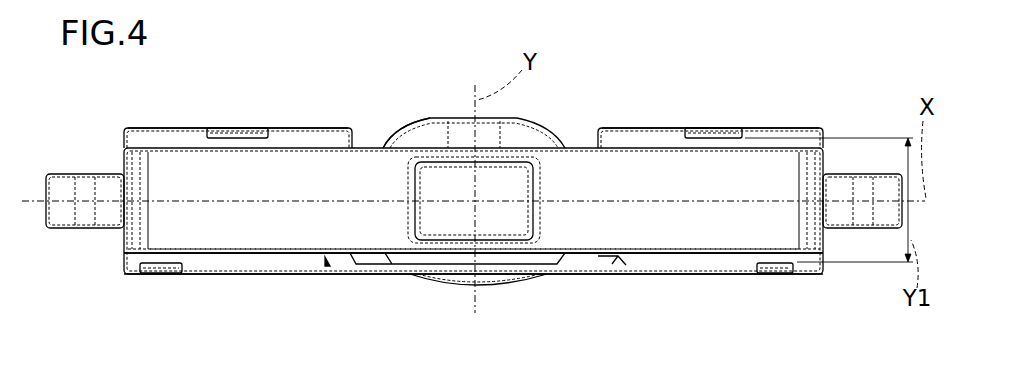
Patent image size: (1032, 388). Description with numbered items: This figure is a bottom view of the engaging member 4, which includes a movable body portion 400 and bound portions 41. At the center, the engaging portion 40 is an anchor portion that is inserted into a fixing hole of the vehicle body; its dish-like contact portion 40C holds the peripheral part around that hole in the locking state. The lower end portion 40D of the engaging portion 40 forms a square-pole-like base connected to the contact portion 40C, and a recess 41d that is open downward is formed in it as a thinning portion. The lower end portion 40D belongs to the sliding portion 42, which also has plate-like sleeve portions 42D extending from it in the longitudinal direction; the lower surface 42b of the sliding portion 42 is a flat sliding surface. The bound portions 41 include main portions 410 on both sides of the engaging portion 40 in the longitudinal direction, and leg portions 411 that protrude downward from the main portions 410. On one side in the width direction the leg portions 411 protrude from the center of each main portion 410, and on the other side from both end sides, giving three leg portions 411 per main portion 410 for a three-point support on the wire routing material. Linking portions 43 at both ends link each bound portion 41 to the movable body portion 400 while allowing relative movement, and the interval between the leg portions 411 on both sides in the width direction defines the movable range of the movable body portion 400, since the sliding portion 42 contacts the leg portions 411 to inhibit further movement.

The engaging member 4 is at (566, 88).
The engaging portion 40 is at (426, 116).
The movable body portion 400 is at (384, 129).
The lower end portion 40D is at (516, 153).
The contact portion 40C is at (442, 278).
The bound portions 41 is at (161, 136).
The recess 41d is at (493, 226).
The main portions 410 is at (305, 142).
The leg portions 411 is at (242, 137).
The sliding portion 42 is at (677, 257).
The lower surface 42b is at (218, 232).
The sleeve portions 42D is at (267, 237).
The linking portions 43 is at (87, 183).